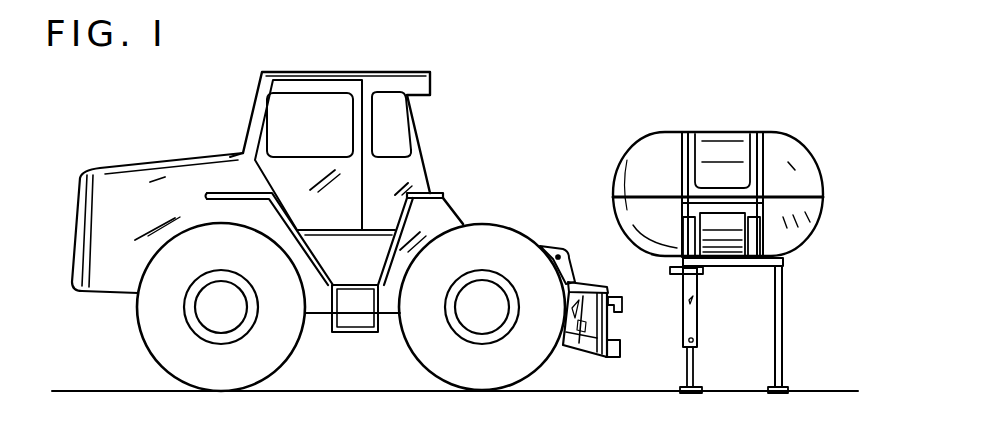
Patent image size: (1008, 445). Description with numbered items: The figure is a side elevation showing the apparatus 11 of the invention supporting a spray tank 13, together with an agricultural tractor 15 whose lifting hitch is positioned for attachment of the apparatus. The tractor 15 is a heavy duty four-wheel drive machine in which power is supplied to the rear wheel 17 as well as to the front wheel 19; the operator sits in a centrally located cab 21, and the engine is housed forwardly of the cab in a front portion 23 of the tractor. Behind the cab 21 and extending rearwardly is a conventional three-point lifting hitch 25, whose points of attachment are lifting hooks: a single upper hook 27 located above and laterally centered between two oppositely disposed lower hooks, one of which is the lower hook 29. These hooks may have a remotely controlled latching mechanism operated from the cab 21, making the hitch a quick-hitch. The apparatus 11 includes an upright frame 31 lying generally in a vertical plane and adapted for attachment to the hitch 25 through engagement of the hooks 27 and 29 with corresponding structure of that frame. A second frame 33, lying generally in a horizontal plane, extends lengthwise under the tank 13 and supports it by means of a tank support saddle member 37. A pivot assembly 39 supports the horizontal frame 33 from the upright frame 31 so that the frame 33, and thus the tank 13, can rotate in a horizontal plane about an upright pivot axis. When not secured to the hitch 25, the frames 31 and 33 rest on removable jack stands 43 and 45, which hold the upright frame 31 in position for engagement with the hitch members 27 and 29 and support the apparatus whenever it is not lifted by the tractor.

The apparatus 11 is at (737, 325).
The spray tank 13 is at (797, 143).
The agricultural tractor 15 is at (430, 170).
The rear wheel 17 is at (498, 223).
The front wheel 19 is at (140, 337).
The cab 21 is at (378, 72).
The front portion 23 is at (130, 163).
The three-point lifting hitch 25 is at (586, 279).
The upper hook 27 is at (622, 300).
The lower hook 29 is at (620, 358).
The upright frame 31 is at (697, 303).
The second frame 33 is at (765, 272).
The tank support saddle member 37 is at (763, 233).
The pivot assembly 39 is at (708, 271).
The jack stand 43 is at (782, 353).
The jack stand 45 is at (695, 380).